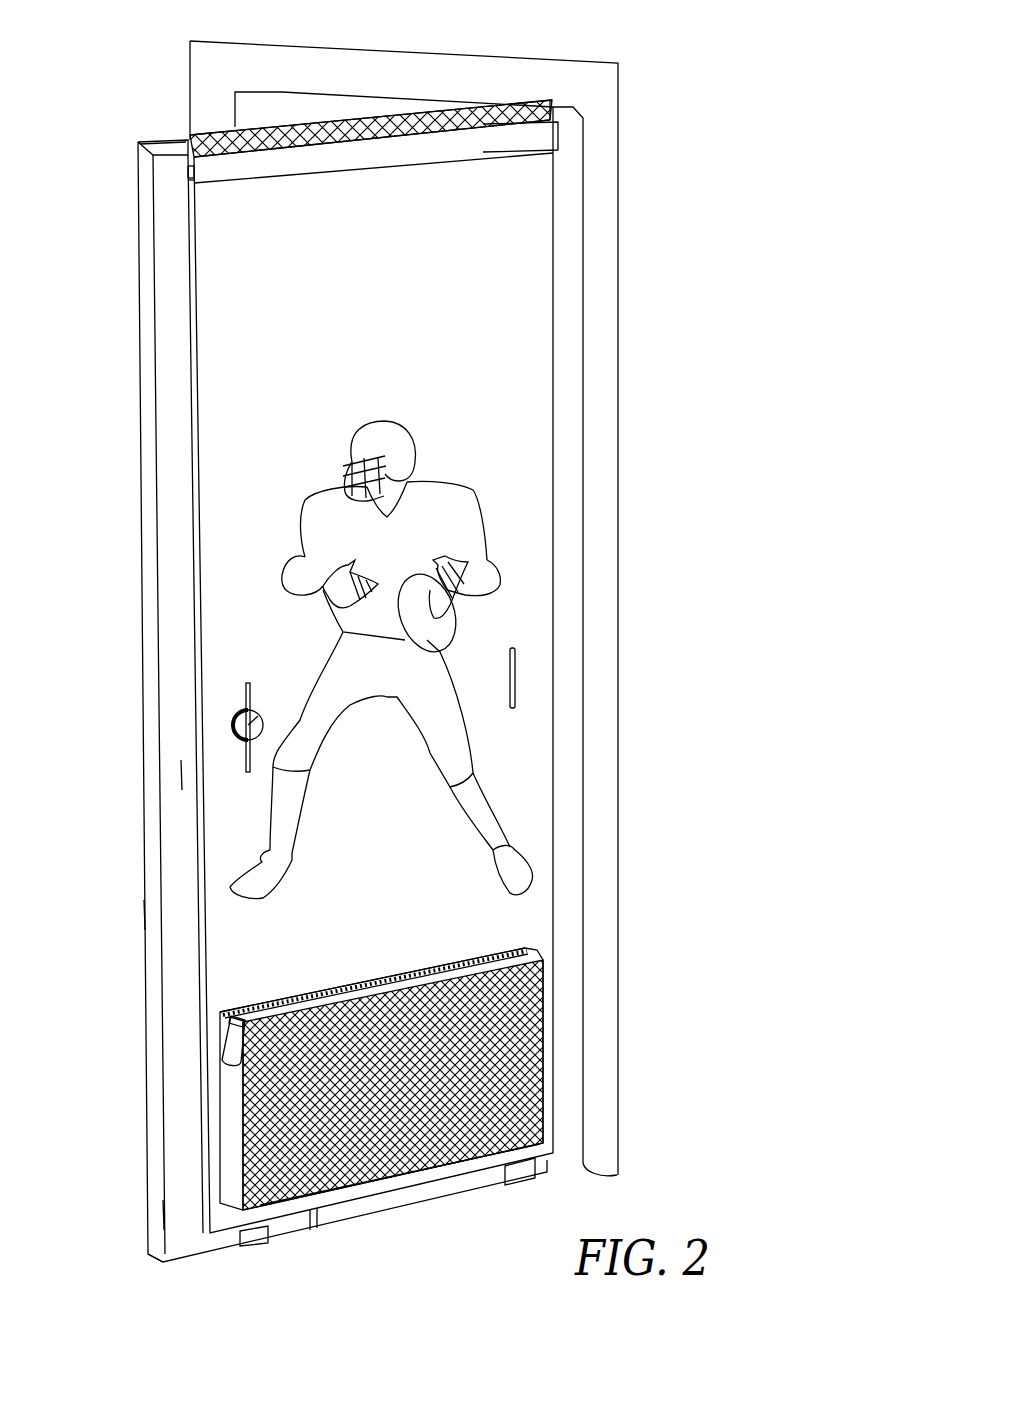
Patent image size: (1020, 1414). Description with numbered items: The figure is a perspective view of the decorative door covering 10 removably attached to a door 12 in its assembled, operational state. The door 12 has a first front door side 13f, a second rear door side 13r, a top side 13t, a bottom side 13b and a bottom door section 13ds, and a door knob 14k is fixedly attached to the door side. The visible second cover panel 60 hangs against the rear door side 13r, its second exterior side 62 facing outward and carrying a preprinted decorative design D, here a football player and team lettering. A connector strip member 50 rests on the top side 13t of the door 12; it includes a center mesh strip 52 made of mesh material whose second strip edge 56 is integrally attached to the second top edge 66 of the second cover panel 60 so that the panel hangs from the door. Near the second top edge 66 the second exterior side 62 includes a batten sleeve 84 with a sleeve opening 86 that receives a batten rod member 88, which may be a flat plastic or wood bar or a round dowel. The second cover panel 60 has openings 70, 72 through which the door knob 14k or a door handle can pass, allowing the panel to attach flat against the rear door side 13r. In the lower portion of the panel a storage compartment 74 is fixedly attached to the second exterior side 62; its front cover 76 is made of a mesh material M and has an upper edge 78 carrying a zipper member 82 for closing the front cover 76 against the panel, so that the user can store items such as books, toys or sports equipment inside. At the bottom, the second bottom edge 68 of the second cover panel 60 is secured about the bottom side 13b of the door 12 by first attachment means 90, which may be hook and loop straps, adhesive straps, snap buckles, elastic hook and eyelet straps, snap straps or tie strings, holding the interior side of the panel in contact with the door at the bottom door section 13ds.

The decorative door covering 10 is at (563, 281).
The door 12 is at (143, 650).
The top side 13t is at (167, 145).
The second (rear) door side 13r is at (182, 753).
The first (front) door side 13f is at (146, 927).
The bottom door section 13ds is at (180, 1212).
The bottom side 13b is at (155, 1258).
The batten rod member 88 is at (188, 173).
The sleeve opening 86 is at (183, 186).
The second cover panel 60 is at (238, 487).
The second exterior side 62 is at (243, 410).
The batten sleeve 84 is at (417, 153).
The connector strip member 50 is at (548, 95).
The center mesh strip 52 is at (478, 100).
The second strip edge 56 is at (368, 150).
The second top edge 66 is at (480, 122).
The opening 70 is at (249, 683).
The door knob 14k is at (262, 715).
The opening 72 is at (519, 650).
The preprinted decorative design D is at (423, 503).
The storage compartment 74 is at (522, 1078).
The zipper member 82 is at (450, 952).
The upper edge 78 is at (370, 1000).
The front cover 76 is at (313, 1050).
The mesh material M is at (400, 1146).
The second bottom edge 68 is at (311, 1224).
The first attachment means 90 is at (256, 1246).